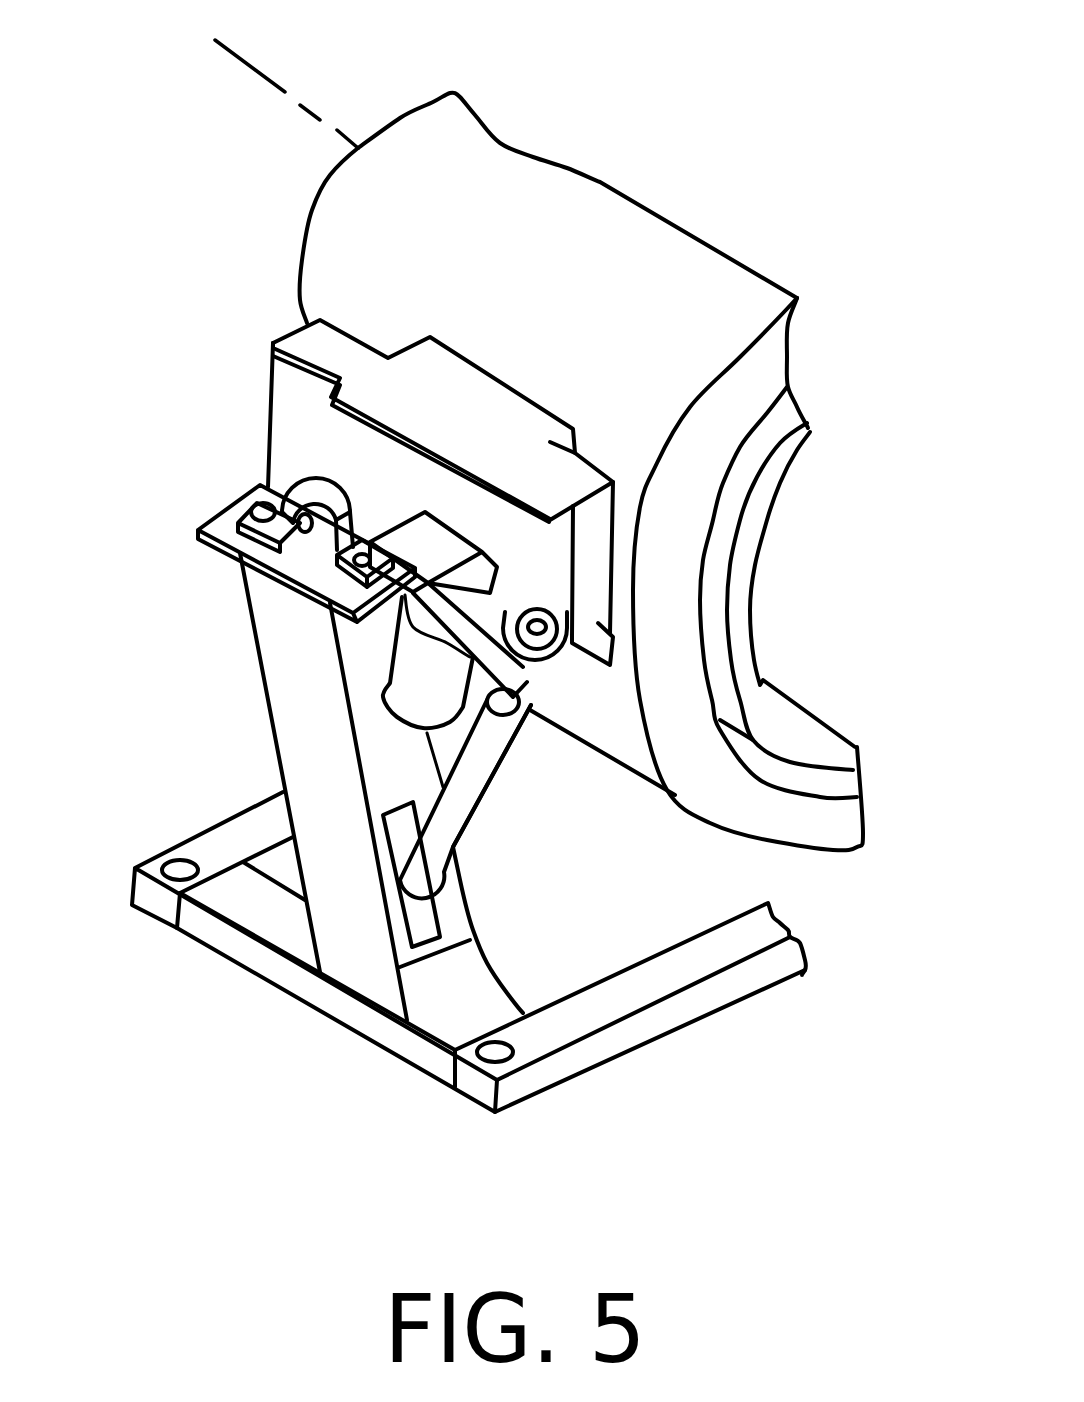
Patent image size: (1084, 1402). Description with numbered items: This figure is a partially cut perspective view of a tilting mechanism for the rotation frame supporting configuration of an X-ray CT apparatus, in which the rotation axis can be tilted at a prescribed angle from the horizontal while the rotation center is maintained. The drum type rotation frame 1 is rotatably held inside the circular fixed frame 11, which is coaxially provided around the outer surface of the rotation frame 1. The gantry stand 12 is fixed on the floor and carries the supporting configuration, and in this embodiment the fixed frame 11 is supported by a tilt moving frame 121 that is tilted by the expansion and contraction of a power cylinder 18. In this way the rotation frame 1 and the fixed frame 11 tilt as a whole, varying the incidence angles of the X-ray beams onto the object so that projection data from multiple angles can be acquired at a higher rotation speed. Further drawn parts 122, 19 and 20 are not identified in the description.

The rotation frame 1 is at (808, 432).
The fixed frame 11 is at (582, 205).
The gantry stand 12 is at (257, 947).
The tilt moving frame 121 is at (392, 387).
The support pillar 122 is at (277, 685).
The power cylinder 18 is at (467, 790).
The actuator cylinder 19 is at (417, 690).
The slot block 20 is at (443, 910).